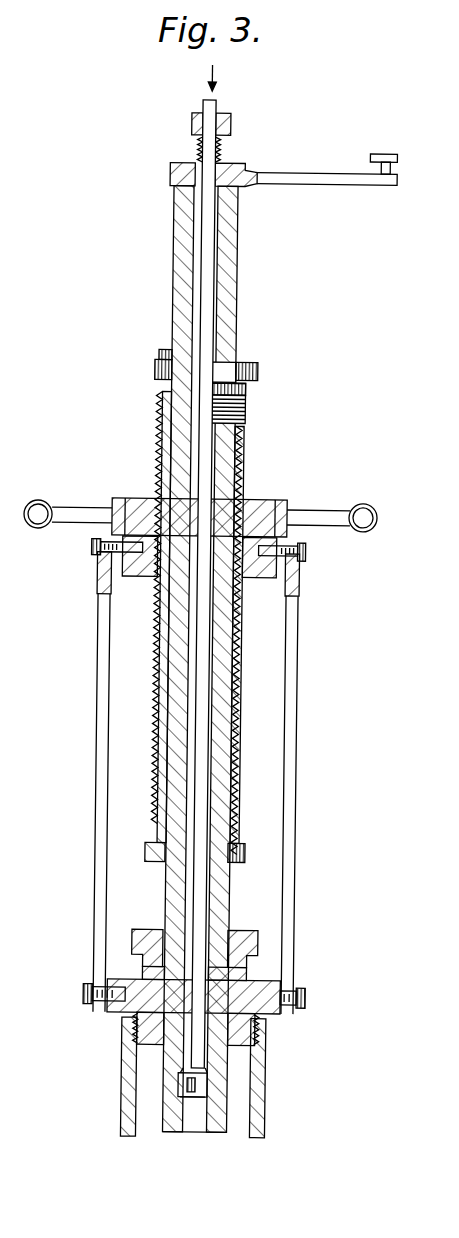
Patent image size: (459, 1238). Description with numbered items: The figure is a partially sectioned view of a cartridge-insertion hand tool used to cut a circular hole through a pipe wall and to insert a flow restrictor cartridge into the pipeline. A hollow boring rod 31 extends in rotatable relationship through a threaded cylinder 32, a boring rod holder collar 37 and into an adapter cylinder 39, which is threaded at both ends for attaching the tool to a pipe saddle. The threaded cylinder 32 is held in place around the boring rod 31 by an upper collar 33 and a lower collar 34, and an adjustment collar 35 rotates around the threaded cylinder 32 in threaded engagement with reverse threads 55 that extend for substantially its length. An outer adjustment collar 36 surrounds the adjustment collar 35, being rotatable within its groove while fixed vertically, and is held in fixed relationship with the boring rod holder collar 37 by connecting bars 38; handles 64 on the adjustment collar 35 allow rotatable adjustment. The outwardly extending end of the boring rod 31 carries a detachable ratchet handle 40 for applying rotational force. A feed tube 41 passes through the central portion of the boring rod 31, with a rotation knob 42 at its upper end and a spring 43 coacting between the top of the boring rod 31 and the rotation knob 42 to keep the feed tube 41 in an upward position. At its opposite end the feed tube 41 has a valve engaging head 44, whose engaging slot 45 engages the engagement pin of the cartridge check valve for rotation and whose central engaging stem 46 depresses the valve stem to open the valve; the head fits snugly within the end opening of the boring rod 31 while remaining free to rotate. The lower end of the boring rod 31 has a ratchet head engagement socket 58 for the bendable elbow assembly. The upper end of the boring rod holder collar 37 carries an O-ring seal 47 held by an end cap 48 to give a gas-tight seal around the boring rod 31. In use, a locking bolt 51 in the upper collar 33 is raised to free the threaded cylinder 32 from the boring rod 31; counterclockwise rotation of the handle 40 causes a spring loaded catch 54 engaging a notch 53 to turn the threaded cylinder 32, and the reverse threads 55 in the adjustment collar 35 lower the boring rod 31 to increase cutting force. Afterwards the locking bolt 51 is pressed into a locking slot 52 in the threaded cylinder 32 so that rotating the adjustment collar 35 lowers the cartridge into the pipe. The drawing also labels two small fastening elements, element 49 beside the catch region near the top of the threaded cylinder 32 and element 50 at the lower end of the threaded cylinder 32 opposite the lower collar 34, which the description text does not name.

The hollow boring rod 31 is at (169, 229).
The threaded cylinder 32 is at (158, 467).
The upper collar 33 is at (152, 372).
The lower collar 34 is at (148, 852).
The adjustment collar 35 is at (268, 500).
The outer adjustment collar 36 is at (120, 562).
The boring rod holder collar 37 is at (272, 1015).
The connecting bars 38 is at (98, 727).
The adapter cylinder 39 is at (271, 1090).
The handle 40 is at (320, 174).
The feed tube 41 is at (211, 248).
The rotation knob 42 is at (186, 118).
The spring 43 is at (190, 146).
The valve engaging head 44 is at (186, 1093).
The engaging slot 45 is at (197, 1100).
The engaging stem 46 is at (184, 1083).
The O-ring seal 47 is at (162, 940).
The end cap 48 is at (262, 945).
The set screw 49 is at (255, 370).
The nut 50 is at (248, 852).
The locking bolt 51 is at (158, 350).
The locking slot 52 is at (157, 392).
The notch 53 is at (243, 390).
The spring loaded catch 54 is at (228, 362).
The reverse threads 55 is at (243, 412).
The ratchet head engagement socket 58 is at (188, 1133).
The handles 64 is at (37, 502).